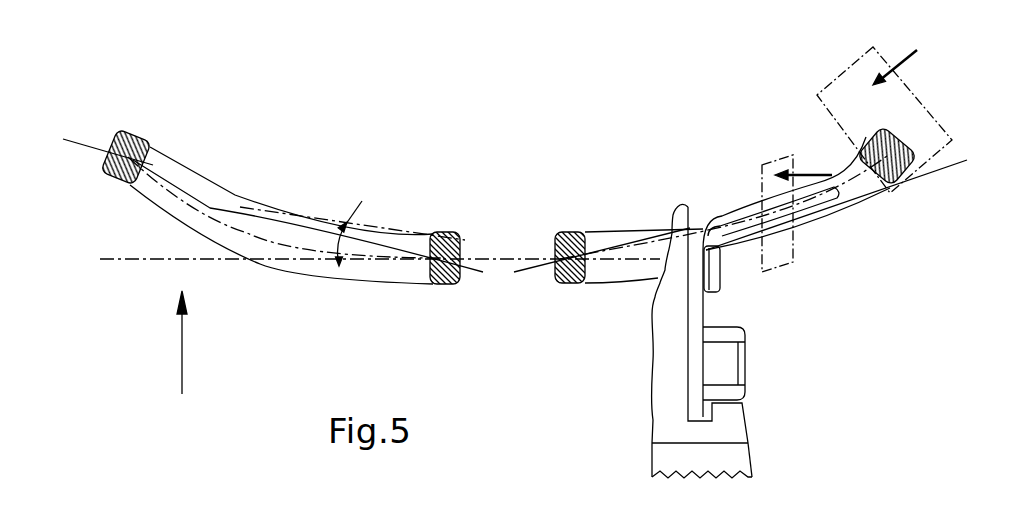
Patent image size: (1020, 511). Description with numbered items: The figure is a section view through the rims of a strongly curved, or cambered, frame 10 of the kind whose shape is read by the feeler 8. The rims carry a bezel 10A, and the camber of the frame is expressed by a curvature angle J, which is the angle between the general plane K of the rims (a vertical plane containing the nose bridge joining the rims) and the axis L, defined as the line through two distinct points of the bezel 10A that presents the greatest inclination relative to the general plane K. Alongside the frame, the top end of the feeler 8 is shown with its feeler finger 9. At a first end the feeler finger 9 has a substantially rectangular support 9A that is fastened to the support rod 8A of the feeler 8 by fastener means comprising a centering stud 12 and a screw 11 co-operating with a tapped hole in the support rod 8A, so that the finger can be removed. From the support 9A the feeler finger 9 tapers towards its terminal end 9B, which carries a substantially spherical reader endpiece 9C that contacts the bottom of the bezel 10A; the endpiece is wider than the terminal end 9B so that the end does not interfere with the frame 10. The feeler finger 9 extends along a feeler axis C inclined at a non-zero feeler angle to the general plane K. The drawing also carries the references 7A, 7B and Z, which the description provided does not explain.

The first force direction 7A is at (797, 206).
The second force direction 7B is at (884, 108).
The feeler 8 is at (640, 421).
The support rod 8A is at (738, 431).
The feeler finger 9 is at (745, 193).
The support 9A is at (700, 311).
The terminal end 9B is at (806, 206).
The reader endpiece 9C is at (848, 203).
The frame 10 is at (449, 205).
The bezel 10A is at (232, 224).
The screw 11 is at (748, 381).
The centering stud 12 is at (722, 284).
The feeler axis C is at (946, 171).
The curvature angle J is at (353, 233).
The general plane K is at (116, 259).
The axis L is at (87, 147).
The vertical direction Z is at (168, 342).